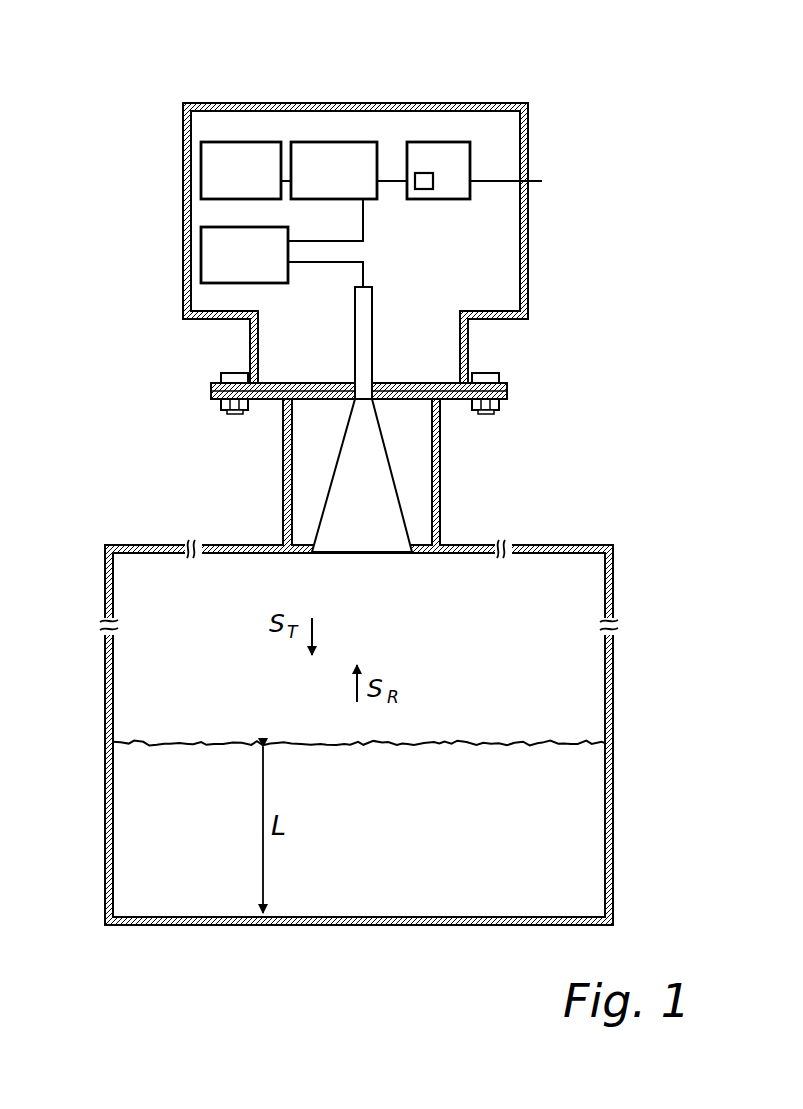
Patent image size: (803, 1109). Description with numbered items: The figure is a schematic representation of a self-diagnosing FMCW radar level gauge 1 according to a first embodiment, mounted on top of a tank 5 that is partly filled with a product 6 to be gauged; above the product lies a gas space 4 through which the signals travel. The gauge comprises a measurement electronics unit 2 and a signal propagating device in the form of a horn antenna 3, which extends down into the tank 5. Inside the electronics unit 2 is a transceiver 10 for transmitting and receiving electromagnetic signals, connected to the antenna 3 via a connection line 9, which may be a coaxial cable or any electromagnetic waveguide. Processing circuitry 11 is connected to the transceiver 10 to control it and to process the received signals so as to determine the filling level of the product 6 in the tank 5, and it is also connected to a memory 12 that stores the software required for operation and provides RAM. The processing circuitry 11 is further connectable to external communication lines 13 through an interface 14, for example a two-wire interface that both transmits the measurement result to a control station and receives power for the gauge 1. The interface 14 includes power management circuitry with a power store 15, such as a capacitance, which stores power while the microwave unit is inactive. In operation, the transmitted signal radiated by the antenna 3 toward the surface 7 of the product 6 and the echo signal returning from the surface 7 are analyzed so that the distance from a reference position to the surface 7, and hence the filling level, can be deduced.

The radar level gauge 1 is at (612, 297).
The measurement electronics unit 2 is at (272, 102).
The horn antenna 3 is at (412, 537).
The gas space 4 is at (180, 627).
The tank 5 is at (540, 543).
The product 6 is at (540, 853).
The surface 7 is at (567, 738).
The connection line 9 is at (374, 280).
The transceiver 10 is at (201, 258).
The processing circuitry 11 is at (343, 143).
The memory 12 is at (201, 181).
The external communication lines 13 is at (535, 183).
The interface 14 is at (442, 143).
The power store 15 is at (425, 189).